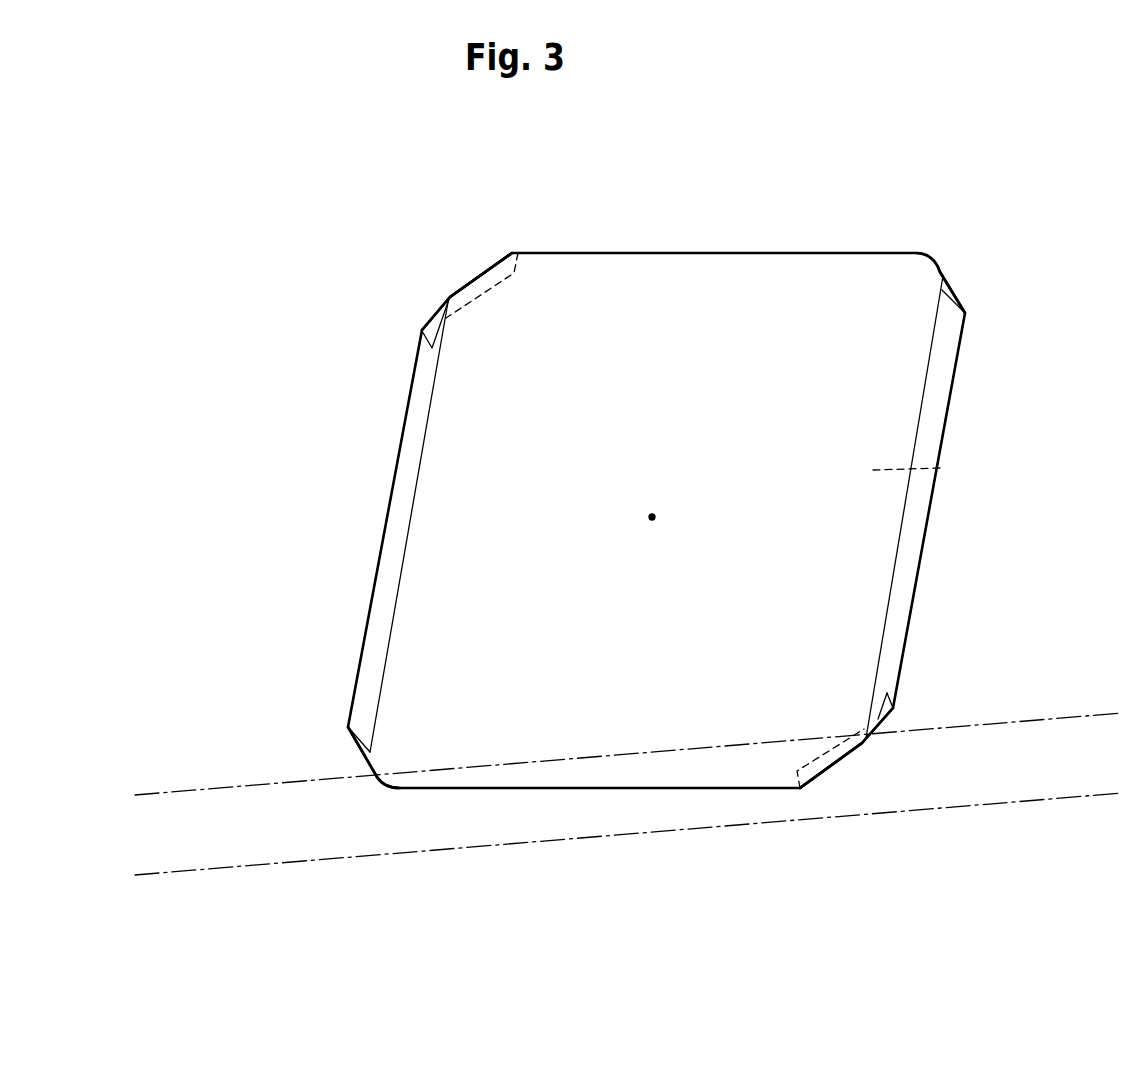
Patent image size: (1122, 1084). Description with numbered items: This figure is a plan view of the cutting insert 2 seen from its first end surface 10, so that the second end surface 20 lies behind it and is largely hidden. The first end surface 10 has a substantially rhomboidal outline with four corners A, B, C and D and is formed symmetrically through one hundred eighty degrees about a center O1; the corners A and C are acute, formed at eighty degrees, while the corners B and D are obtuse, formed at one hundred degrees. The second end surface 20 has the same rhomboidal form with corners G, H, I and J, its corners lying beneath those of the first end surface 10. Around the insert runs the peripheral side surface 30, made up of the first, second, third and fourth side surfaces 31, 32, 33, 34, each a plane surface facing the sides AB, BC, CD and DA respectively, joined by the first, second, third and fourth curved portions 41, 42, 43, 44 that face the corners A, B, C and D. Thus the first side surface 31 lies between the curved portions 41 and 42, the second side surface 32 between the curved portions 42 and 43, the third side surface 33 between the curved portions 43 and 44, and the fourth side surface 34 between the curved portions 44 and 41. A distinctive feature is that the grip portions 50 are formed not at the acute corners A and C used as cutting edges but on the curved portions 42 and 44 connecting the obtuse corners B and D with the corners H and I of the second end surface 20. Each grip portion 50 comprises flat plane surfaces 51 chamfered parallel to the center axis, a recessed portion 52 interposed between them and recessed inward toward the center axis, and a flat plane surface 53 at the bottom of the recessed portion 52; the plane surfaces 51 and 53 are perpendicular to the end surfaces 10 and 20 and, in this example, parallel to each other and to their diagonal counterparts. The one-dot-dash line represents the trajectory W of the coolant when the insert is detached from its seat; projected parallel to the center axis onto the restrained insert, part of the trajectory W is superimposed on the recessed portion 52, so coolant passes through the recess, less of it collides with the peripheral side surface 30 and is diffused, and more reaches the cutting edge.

The cutting insert 2 is at (597, 962).
The first end surface 10 is at (863, 390).
The second end surface 20 is at (940, 468).
The peripheral side surface 30 is at (935, 413).
The first side surface 31 is at (598, 788).
The second side surface 32 is at (913, 530).
The third side surface 33 is at (702, 253).
The fourth side surface 34 is at (385, 533).
The first curved portion 41 is at (368, 765).
The second curved portion 42 is at (852, 750).
The third curved portion 43 is at (950, 283).
The fourth curved portion 44 is at (464, 292).
The grip portion 50 is at (486, 266).
The plane surface 51 is at (490, 268).
The recessed portion 52 is at (422, 331).
The plane surface 53 is at (518, 253).
The center O1 is at (652, 517).
The corner A is at (380, 790).
The corner B is at (838, 763).
The corner C is at (932, 258).
The corner D is at (472, 285).
The corner G is at (345, 762).
The corner H is at (870, 742).
The corner I is at (957, 287).
The corner J is at (452, 297).
The trajectory of the coolant W is at (230, 868).